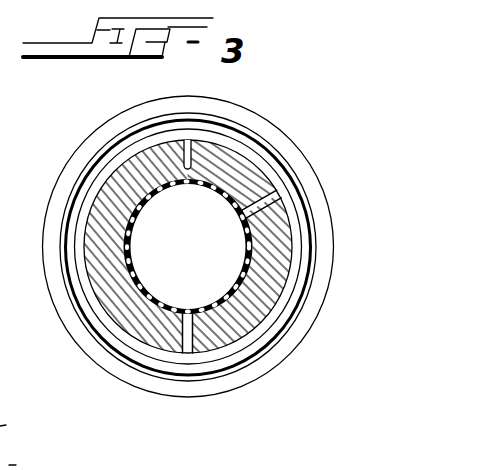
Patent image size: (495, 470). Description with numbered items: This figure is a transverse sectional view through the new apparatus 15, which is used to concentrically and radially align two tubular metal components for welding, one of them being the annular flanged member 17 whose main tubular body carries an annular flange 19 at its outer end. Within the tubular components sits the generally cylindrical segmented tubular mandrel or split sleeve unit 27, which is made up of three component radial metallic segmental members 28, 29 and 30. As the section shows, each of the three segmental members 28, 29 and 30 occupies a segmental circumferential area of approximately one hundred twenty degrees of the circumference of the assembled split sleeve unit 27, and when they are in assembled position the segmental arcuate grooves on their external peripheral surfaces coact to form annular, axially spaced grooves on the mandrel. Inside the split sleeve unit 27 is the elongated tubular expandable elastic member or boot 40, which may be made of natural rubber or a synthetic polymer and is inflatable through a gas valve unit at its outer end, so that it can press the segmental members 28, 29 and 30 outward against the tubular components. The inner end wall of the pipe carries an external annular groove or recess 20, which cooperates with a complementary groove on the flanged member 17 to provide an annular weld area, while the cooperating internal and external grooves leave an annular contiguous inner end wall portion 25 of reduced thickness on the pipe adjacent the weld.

The apparatus 15 is at (244, 160).
The annular flanged member 17 is at (25, 464).
The annular flange 19 is at (15, 426).
The annular groove or recess 20 is at (326, 228).
The annular contiguous inner end wall portion 25 is at (295, 258).
The segmented tubular mandrel or split sleeve unit 27 is at (226, 357).
The radial segmental member 28 is at (210, 163).
The radial segmental member 29 is at (274, 313).
The radial segmental member 30 is at (128, 312).
The elongated tubular expandable elastic member or boot 40 is at (165, 194).